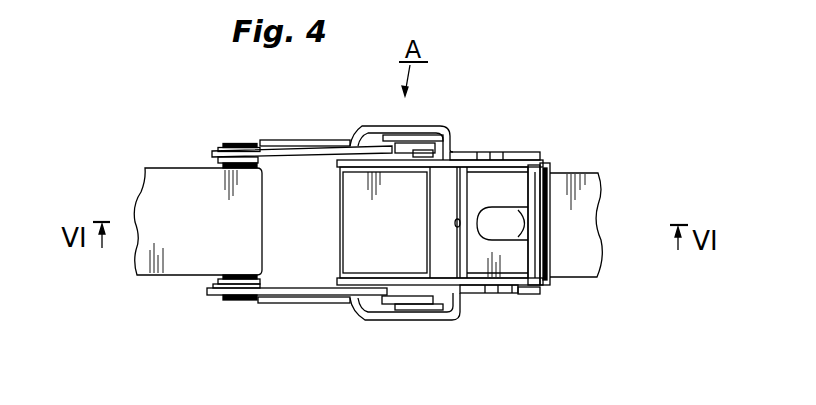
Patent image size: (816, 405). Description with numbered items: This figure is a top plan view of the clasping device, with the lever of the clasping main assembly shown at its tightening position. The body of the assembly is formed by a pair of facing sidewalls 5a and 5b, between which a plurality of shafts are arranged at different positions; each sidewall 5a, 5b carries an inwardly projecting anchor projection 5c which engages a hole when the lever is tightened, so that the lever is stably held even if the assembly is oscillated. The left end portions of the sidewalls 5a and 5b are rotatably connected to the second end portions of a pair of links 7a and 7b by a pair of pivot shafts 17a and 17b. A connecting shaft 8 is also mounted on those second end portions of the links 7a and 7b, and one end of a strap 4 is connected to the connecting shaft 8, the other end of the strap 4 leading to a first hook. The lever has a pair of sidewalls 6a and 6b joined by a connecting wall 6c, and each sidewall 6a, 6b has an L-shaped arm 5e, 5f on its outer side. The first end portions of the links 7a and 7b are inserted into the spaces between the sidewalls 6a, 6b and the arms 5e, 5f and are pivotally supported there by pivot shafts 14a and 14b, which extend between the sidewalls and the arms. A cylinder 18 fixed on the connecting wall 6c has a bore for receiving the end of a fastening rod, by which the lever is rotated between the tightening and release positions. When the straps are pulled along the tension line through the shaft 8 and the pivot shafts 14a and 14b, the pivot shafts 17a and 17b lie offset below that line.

The strap 4 is at (176, 166).
The connecting shaft 8 is at (219, 143).
The link 7a is at (326, 149).
The link 7b is at (320, 292).
The pivot shaft 17a is at (270, 140).
The pivot shaft 17b is at (270, 298).
The L-shaped arm 5e is at (415, 157).
The L-shaped arm 5f is at (449, 320).
The sidewall 5a is at (453, 138).
The sidewall 5b is at (460, 300).
The anchor projection 5c is at (503, 152).
The pivot shaft 14a is at (477, 160).
The pivot shaft 14b is at (412, 290).
The sidewall 6a is at (538, 155).
The sidewall 6b is at (517, 296).
The connecting wall 6c is at (520, 253).
The cylinder 18 is at (514, 212).